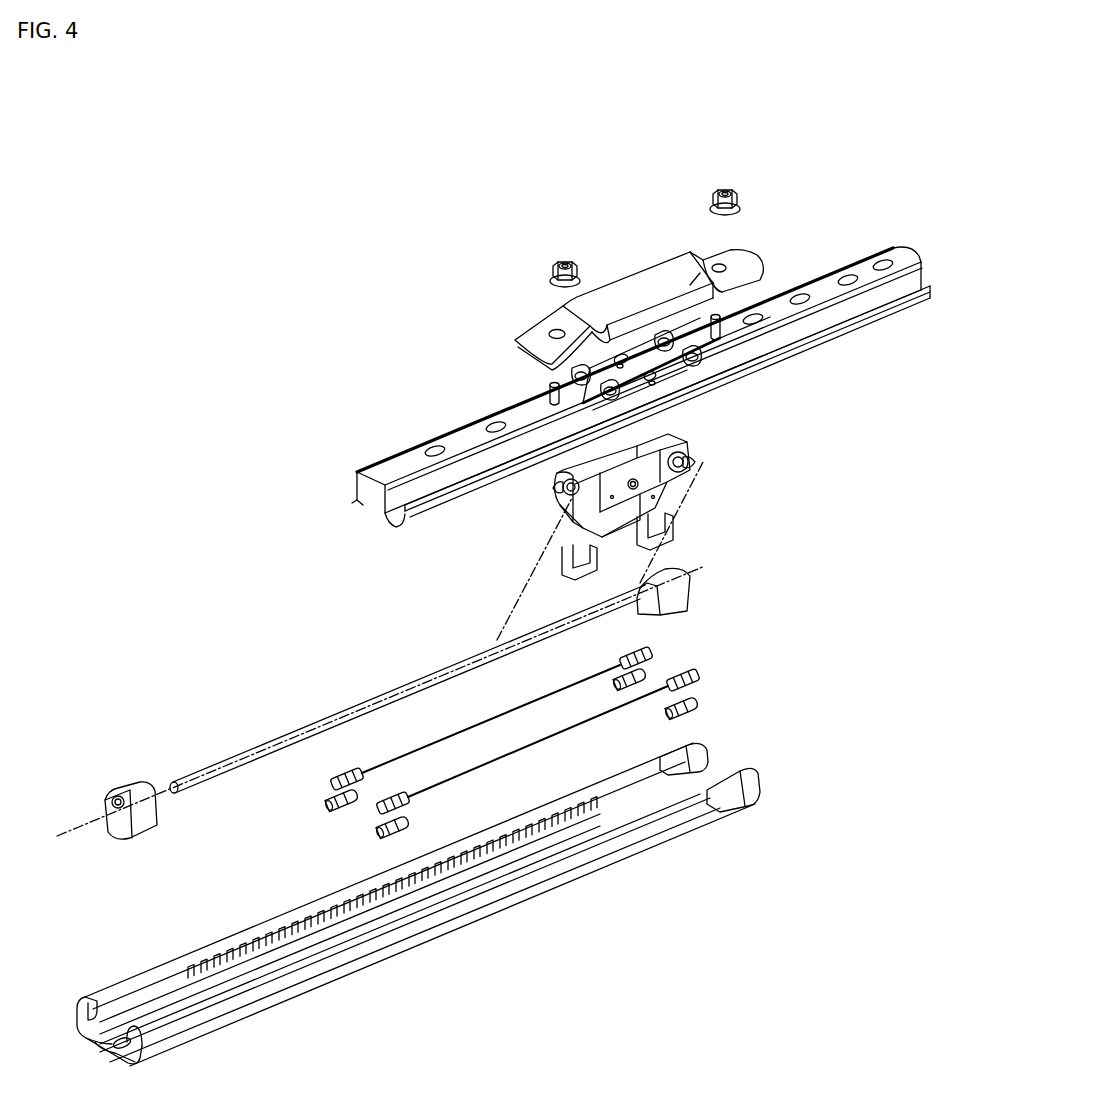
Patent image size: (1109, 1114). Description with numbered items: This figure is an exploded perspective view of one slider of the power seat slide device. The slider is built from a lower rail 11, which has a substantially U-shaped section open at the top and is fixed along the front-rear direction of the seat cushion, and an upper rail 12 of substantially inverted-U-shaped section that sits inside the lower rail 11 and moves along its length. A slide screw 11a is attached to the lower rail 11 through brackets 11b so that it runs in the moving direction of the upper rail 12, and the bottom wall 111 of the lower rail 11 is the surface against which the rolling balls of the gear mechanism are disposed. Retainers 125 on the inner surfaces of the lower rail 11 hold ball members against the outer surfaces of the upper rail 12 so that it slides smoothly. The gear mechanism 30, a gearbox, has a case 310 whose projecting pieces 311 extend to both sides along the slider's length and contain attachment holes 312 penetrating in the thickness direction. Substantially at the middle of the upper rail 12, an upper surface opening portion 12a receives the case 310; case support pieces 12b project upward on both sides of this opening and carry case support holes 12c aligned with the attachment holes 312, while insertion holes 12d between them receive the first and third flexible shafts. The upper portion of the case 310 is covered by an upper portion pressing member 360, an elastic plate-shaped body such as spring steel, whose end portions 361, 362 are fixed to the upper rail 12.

The lower rail 11 is at (400, 907).
The slide screw 11a is at (360, 702).
The bracket 11b is at (690, 600).
The bottom wall 111 is at (102, 1040).
The upper rail 12 is at (900, 263).
The upper surface opening portion 12a is at (590, 396).
The case support piece 12b is at (630, 352).
The case support hole 12c is at (558, 373).
The insertion hole 12d is at (620, 355).
The retainer 125 is at (683, 633).
The gear mechanism 30 is at (621, 537).
The case 310 is at (654, 504).
The projecting piece 311 is at (689, 456).
The attachment hole 312 is at (692, 459).
The upper portion pressing member 360 is at (655, 285).
The end portion 361 is at (541, 338).
The bracket right foot 362 is at (745, 262).